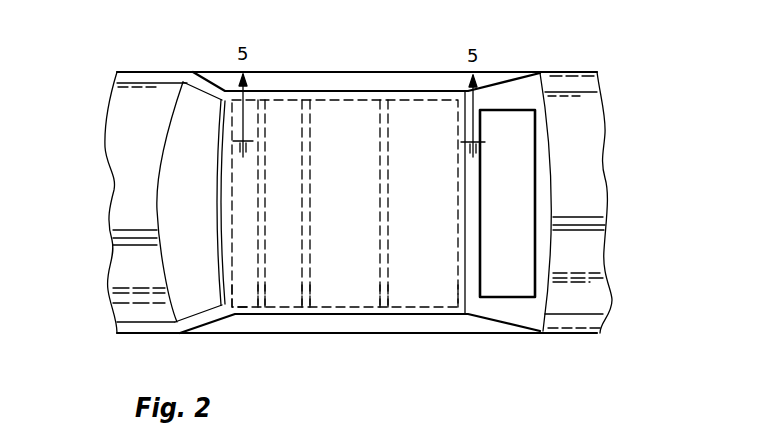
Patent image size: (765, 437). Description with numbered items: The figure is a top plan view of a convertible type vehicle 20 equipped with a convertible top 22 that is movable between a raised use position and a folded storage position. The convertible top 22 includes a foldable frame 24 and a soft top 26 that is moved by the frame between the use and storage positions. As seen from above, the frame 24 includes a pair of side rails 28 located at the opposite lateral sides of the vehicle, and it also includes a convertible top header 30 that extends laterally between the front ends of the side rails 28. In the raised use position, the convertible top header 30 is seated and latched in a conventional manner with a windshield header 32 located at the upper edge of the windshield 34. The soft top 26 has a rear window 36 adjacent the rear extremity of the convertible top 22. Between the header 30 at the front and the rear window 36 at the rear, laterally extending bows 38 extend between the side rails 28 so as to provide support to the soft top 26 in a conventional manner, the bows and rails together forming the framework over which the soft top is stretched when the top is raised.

The convertible type vehicle 20 is at (129, 49).
The convertible top 22 is at (497, 80).
The foldable frame 24 is at (345, 97).
The soft top 26 is at (425, 80).
The side rails 28 is at (381, 98).
The convertible top header 30 is at (233, 287).
The windshield header 32 is at (217, 158).
The windshield 34 is at (185, 135).
The rear window 36 is at (520, 167).
The bows 38 is at (263, 282).